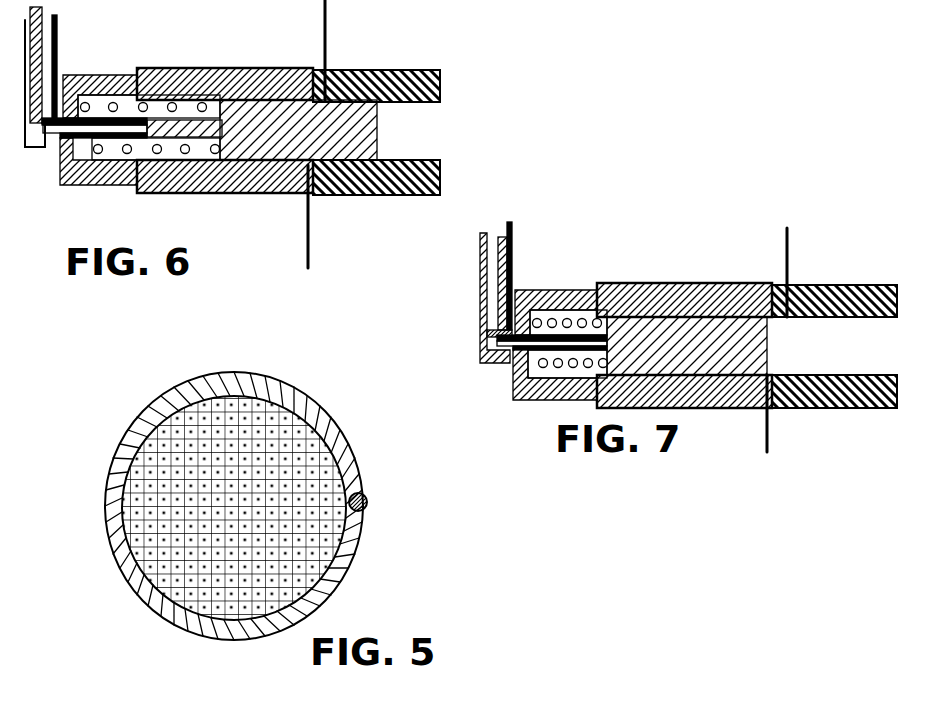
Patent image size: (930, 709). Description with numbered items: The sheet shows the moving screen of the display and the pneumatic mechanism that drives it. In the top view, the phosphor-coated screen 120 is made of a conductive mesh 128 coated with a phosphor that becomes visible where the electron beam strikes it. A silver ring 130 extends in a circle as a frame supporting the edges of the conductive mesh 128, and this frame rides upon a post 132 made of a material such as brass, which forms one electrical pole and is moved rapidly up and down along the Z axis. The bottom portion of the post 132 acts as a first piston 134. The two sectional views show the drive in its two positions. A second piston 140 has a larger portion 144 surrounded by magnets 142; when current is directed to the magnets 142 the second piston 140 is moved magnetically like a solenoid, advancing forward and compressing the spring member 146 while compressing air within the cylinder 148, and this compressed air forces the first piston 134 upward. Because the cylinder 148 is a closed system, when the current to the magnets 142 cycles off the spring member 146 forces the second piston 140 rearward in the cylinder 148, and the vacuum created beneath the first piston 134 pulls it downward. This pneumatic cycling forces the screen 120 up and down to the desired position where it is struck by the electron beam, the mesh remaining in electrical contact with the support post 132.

In FIG. 5, the phosphor-coated screen 120 is at (268, 411).
In FIG. 5, the conductive mesh 128 is at (153, 572).
In FIG. 5, the silver ring 130 is at (330, 447).
In FIG. 5, the post 132 is at (364, 493).
In FIG. 6, the first piston 134 is at (44, 34).
In FIG. 7, the first piston 134 is at (490, 253).
In FIG. 6, the second piston 140 is at (167, 127).
In FIG. 7, the second piston 140 is at (567, 320).
In FIG. 6, the magnets 142 is at (235, 68).
In FIG. 7, the magnets 142 is at (633, 285).
In FIG. 6, the larger portion of second piston 144 is at (369, 134).
In FIG. 7, the larger portion of second piston 144 is at (758, 344).
In FIG. 6, the spring member 146 is at (113, 107).
In FIG. 7, the spring member 146 is at (500, 303).
In FIG. 6, the cylinder 148 is at (90, 160).
In FIG. 7, the cylinder 148 is at (555, 374).